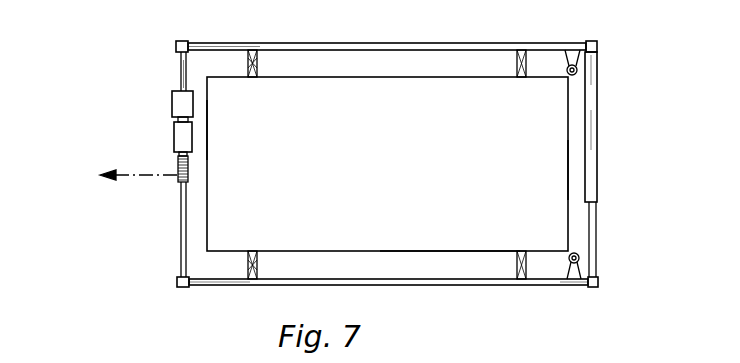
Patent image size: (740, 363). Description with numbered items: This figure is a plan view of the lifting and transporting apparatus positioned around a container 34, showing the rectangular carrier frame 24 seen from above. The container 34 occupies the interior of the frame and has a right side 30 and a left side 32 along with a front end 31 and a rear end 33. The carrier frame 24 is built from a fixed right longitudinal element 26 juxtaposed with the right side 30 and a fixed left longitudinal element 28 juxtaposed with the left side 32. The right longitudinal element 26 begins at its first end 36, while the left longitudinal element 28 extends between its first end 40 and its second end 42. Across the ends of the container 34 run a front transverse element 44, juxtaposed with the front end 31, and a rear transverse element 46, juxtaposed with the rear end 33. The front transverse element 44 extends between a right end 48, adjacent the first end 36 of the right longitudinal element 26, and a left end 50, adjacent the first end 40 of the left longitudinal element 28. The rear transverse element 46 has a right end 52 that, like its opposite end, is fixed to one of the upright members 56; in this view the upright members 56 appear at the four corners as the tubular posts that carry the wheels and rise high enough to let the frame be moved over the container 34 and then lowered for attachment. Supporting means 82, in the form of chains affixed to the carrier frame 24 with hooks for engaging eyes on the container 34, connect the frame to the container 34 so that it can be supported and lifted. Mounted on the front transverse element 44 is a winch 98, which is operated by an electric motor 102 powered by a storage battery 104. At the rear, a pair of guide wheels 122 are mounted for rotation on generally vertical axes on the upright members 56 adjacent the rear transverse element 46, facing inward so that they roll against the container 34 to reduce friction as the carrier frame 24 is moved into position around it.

The carrier frame 24 is at (597, 186).
The right longitudinal element 26 is at (420, 43).
The left longitudinal element 28 is at (385, 286).
The right side 30 is at (378, 78).
The front end 31 is at (207, 132).
The left side 32 is at (490, 250).
The rear end 33 is at (568, 166).
The container 34 is at (327, 200).
The first end 36 is at (212, 44).
The first end 40 is at (210, 286).
The second end 42 is at (585, 288).
The front transverse element 44 is at (180, 75).
The rear transverse element 46 is at (597, 128).
The right end 48 is at (180, 57).
The left end 50 is at (180, 250).
The right end 52 is at (597, 70).
The upright members 56 is at (177, 42).
The supporting means 82 is at (518, 62).
The winch 98 is at (178, 162).
The electric motor 102 is at (174, 130).
The storage battery 104 is at (172, 101).
The guide wheels 122 is at (577, 72).